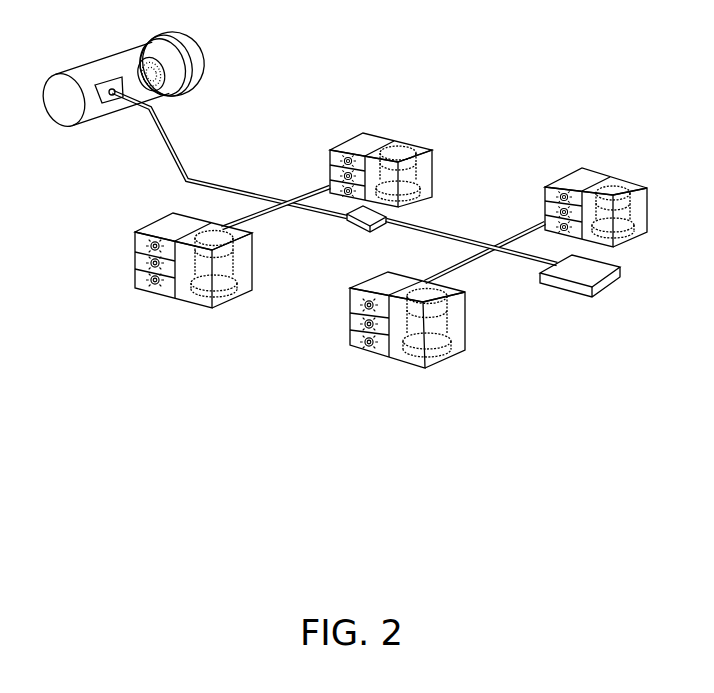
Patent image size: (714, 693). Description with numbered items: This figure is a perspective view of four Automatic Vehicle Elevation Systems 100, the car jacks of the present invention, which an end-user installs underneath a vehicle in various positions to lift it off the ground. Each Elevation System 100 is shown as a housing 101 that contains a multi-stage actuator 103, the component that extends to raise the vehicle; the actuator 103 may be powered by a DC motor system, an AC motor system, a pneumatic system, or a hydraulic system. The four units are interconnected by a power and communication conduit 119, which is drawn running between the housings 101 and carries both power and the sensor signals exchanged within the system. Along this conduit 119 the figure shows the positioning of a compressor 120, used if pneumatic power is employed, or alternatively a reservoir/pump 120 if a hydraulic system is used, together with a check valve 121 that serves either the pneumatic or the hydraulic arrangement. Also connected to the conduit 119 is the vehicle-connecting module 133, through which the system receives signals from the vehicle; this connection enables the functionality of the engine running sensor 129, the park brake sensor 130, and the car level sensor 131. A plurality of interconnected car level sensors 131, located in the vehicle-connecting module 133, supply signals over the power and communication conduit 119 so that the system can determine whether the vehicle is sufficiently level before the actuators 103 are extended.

The Automatic Vehicle Elevation System 100 is at (118, 252).
The housing 101 is at (183, 294).
The multi-stage actuator 103 is at (441, 350).
The power and communication conduit 119 is at (178, 152).
The compressor or reservoir/pump 120 is at (192, 38).
The check valve 121 is at (353, 225).
The engine running sensor 129 is at (580, 351).
The park brake sensor 130 is at (580, 351).
The car level sensor 131 is at (580, 351).
The vehicle-connecting module 133 is at (582, 281).